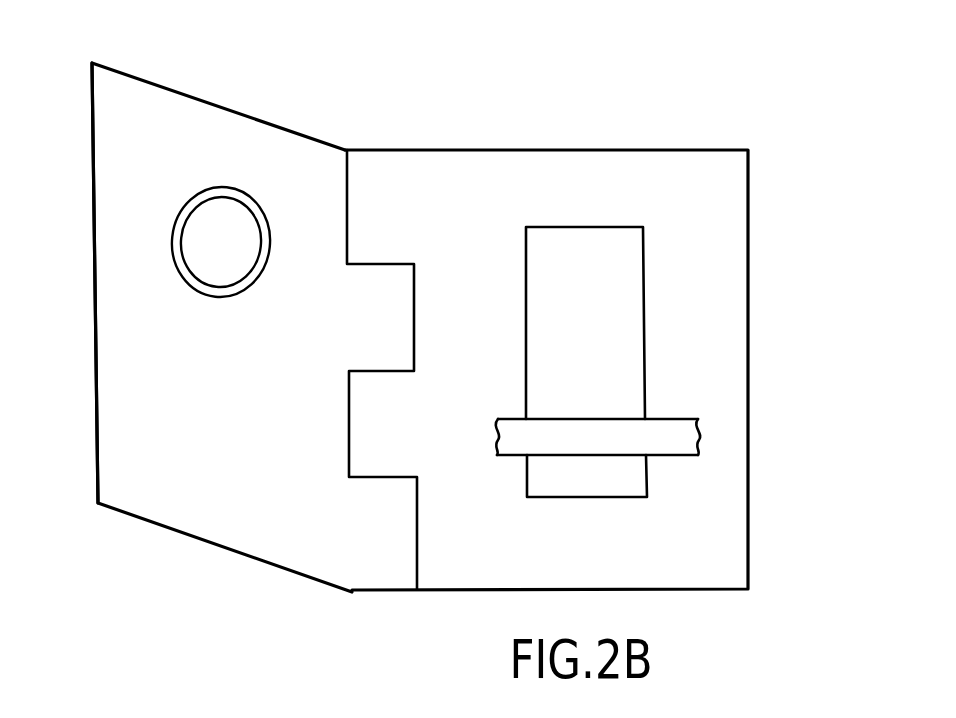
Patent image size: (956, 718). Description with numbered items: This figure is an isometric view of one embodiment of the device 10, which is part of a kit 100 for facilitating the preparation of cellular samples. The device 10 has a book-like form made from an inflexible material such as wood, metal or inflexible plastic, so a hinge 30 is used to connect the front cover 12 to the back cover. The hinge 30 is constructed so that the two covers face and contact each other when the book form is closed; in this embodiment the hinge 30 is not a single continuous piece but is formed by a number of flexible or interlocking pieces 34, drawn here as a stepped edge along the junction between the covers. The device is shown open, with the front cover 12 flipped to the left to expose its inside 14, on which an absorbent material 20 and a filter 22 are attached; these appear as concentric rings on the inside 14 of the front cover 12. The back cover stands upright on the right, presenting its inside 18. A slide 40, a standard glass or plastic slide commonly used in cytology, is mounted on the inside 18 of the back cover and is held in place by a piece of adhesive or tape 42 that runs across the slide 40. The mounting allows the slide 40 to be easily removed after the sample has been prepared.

The kit 100 is at (786, 118).
The device 10 is at (433, 360).
The front cover 12 is at (107, 450).
The inside of the front cover 14 is at (207, 461).
The inside of the back cover 18 is at (684, 211).
The absorbent material 20 is at (190, 222).
The filter 22 is at (188, 272).
The hinge 30 is at (370, 150).
The interlocking pieces 34 is at (383, 467).
The slide 40 is at (572, 321).
The adhesive or tape 42 is at (675, 427).